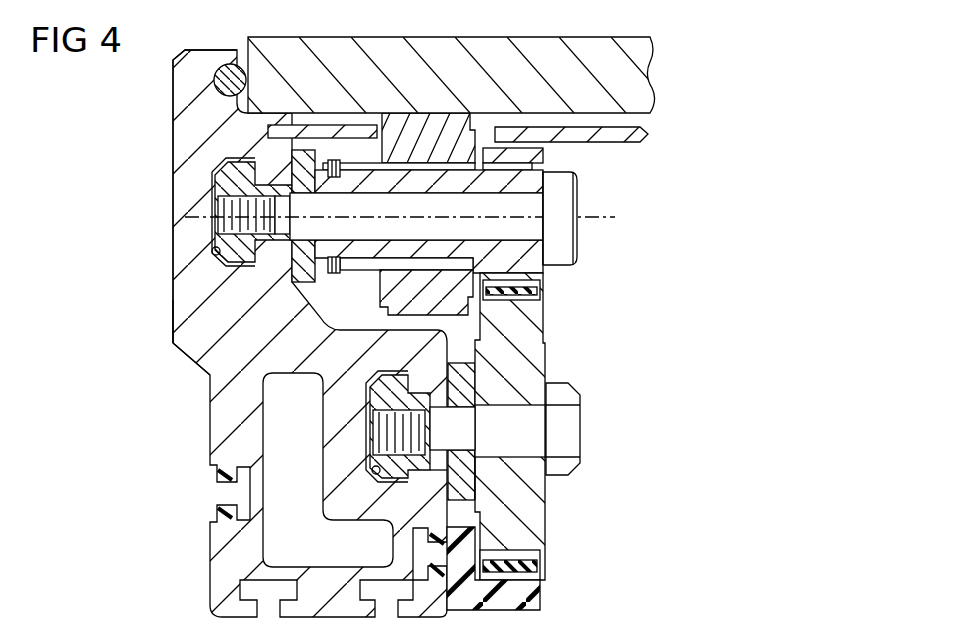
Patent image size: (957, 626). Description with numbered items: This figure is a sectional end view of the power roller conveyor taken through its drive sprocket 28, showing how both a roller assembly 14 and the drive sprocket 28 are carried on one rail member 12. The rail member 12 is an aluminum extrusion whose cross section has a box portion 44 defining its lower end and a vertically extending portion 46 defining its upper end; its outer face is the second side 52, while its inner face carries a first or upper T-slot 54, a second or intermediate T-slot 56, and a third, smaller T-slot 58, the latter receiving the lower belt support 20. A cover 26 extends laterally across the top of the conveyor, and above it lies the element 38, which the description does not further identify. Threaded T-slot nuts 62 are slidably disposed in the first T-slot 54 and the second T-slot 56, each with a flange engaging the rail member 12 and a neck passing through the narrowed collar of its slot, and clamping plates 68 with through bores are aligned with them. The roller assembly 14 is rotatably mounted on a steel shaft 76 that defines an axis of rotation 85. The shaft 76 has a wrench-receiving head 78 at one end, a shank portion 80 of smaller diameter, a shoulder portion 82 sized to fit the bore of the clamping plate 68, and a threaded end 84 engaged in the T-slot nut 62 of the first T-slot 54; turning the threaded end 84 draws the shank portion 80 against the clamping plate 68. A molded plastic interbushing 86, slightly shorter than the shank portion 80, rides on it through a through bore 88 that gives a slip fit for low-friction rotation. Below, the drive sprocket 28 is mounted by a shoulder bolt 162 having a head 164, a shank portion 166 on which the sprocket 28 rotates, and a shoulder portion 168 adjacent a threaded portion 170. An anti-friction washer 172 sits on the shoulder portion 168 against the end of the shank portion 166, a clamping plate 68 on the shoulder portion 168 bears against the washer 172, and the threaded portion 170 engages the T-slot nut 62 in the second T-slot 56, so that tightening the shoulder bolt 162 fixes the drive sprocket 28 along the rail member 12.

The rail member 12 is at (160, 327).
The roller assembly 14 is at (380, 283).
The lower belt support 20 is at (515, 605).
The cover 26 is at (618, 142).
The drive sprocket 28 is at (548, 342).
The table plate 38 is at (598, 37).
The box portion 44 is at (210, 425).
The vertically extending portion 46 is at (173, 128).
The second side 52 is at (184, 350).
The first T-slot 54 is at (212, 250).
The second T-slot 56 is at (372, 468).
The third T-slot 58 is at (482, 565).
The T-slot nut 62 is at (220, 178).
The clamping plate 68 is at (292, 158).
The shaft 76 is at (580, 245).
The head 78 is at (580, 262).
The shank portion 80 is at (500, 240).
The shoulder portion 82 is at (240, 238).
The threaded end 84 is at (222, 205).
The axis of rotation 85 is at (585, 217).
The interbushing 86 is at (410, 172).
The through bore 88 is at (463, 240).
The shoulder bolt 162 is at (580, 420).
The head 164 is at (580, 470).
The shank portion 166 is at (545, 395).
The shoulder portion 168 is at (455, 405).
The threaded portion 170 is at (410, 453).
The anti-friction washer 172 is at (478, 466).